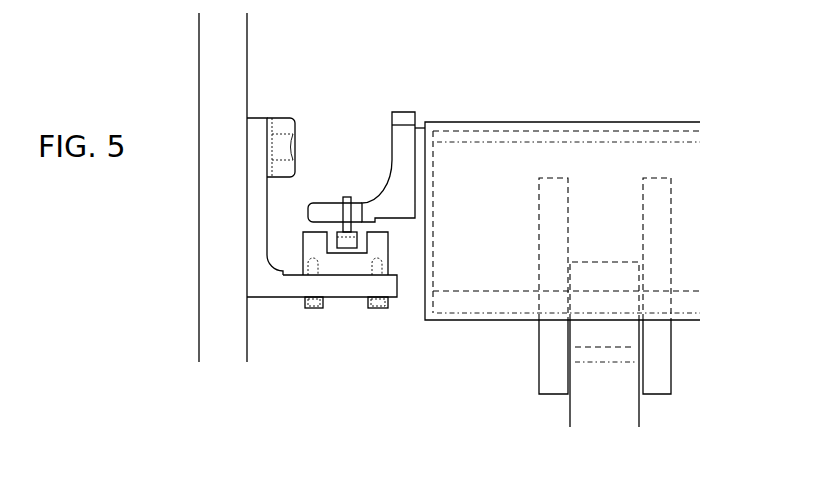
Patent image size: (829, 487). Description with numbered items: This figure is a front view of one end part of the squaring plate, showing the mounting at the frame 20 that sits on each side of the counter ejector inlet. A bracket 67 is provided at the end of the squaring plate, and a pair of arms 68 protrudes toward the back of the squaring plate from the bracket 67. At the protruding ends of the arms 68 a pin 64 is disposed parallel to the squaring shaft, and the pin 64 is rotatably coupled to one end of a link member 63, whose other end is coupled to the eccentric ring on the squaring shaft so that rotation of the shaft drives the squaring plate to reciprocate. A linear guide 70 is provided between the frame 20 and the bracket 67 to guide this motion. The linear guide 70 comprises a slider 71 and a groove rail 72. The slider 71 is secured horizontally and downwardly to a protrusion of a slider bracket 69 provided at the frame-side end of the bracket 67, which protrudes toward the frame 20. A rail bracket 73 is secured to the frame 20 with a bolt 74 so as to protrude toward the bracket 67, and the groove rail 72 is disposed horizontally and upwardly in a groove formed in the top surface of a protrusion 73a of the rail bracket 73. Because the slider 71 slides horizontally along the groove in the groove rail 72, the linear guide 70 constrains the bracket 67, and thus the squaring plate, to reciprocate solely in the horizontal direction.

The frame 20 is at (199, 184).
The link member 63 is at (640, 410).
The pin 64 is at (605, 352).
The bracket 67 is at (545, 155).
The arm 68 is at (539, 353).
The slider bracket 69 is at (408, 128).
The linear guide 70 is at (330, 182).
The slider 71 is at (352, 205).
The groove rail 72 is at (348, 270).
The rail bracket 73 is at (285, 297).
The protrusion 73a is at (394, 302).
The bolt 74 is at (285, 118).